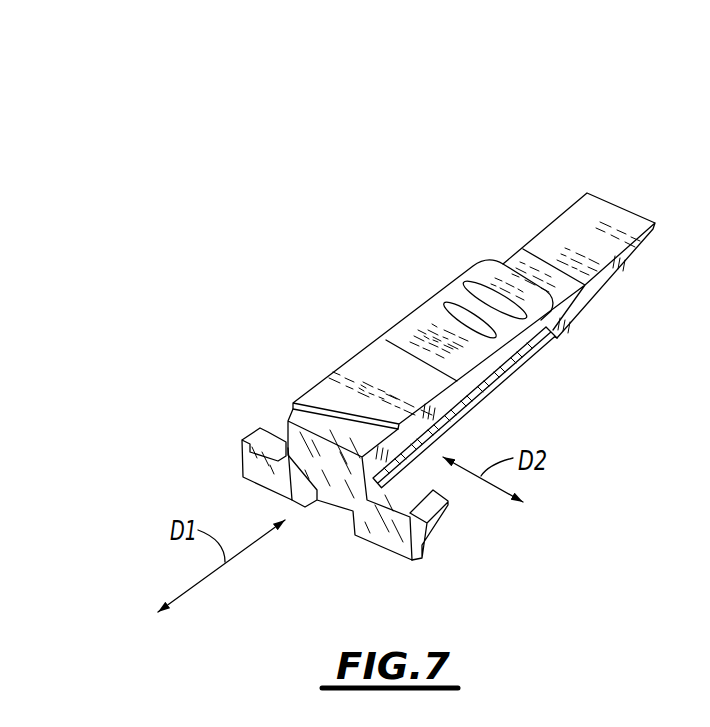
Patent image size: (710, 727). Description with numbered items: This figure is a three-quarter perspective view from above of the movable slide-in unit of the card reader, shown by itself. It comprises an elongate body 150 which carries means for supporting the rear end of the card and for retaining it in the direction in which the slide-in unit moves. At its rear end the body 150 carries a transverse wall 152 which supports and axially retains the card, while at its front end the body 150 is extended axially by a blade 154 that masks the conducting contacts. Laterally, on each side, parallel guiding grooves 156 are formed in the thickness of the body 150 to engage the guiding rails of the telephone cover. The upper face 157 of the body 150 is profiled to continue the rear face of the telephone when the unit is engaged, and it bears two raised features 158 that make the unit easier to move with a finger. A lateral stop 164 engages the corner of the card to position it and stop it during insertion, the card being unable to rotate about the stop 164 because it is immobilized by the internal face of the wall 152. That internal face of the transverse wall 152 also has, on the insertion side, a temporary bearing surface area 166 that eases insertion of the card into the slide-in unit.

The elongate body 150 is at (377, 390).
The transverse wall 152 is at (297, 487).
The blade 154 is at (580, 230).
The guiding grooves 156 is at (490, 386).
The upper face 157 is at (468, 355).
The raised features 158 is at (485, 292).
The lateral stop 164 is at (257, 426).
The temporary bearing surface area 166 is at (425, 509).